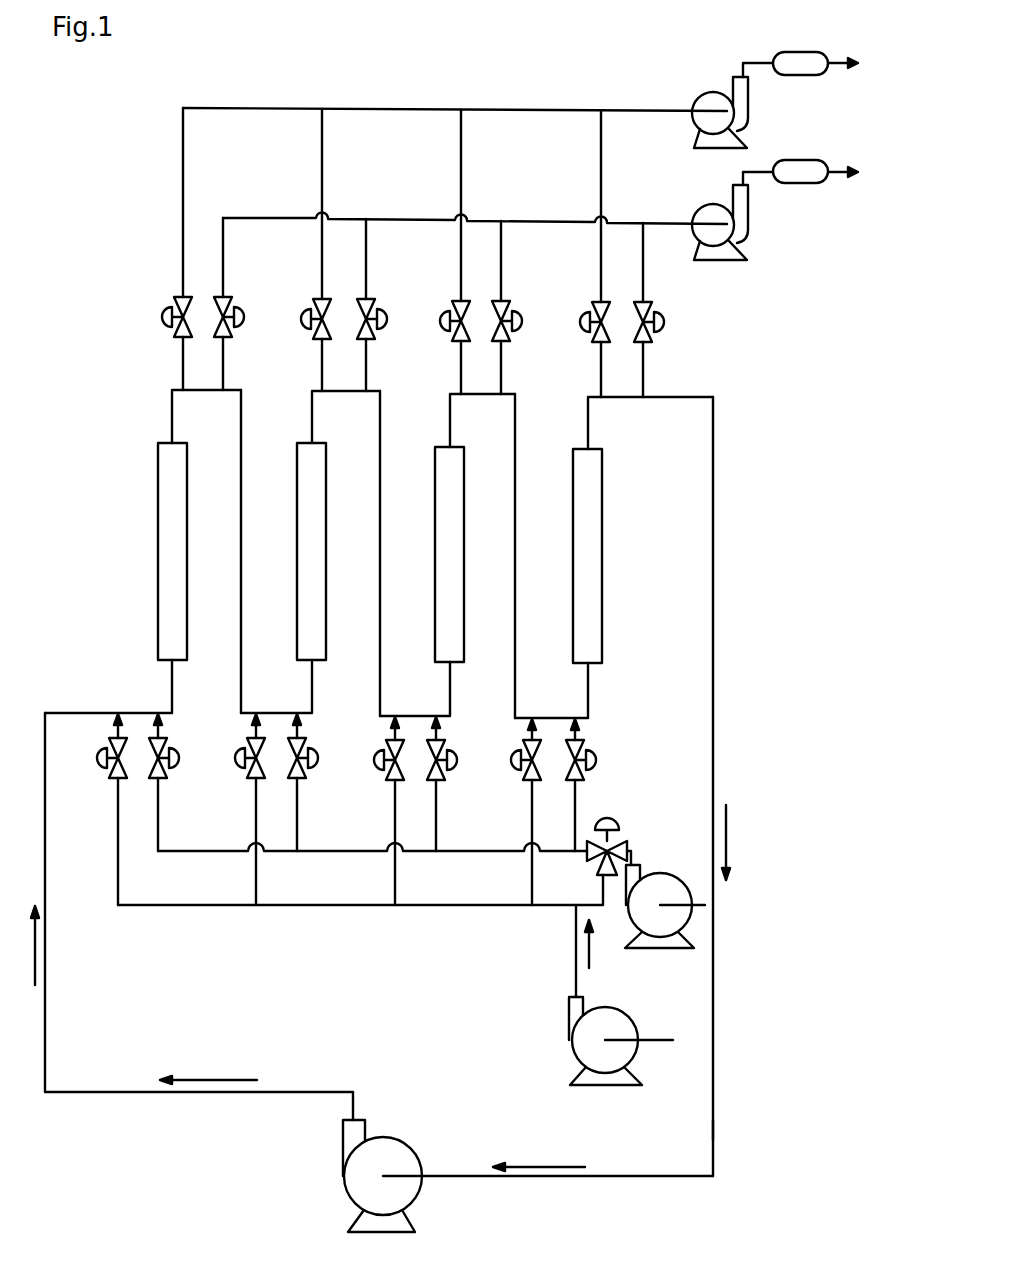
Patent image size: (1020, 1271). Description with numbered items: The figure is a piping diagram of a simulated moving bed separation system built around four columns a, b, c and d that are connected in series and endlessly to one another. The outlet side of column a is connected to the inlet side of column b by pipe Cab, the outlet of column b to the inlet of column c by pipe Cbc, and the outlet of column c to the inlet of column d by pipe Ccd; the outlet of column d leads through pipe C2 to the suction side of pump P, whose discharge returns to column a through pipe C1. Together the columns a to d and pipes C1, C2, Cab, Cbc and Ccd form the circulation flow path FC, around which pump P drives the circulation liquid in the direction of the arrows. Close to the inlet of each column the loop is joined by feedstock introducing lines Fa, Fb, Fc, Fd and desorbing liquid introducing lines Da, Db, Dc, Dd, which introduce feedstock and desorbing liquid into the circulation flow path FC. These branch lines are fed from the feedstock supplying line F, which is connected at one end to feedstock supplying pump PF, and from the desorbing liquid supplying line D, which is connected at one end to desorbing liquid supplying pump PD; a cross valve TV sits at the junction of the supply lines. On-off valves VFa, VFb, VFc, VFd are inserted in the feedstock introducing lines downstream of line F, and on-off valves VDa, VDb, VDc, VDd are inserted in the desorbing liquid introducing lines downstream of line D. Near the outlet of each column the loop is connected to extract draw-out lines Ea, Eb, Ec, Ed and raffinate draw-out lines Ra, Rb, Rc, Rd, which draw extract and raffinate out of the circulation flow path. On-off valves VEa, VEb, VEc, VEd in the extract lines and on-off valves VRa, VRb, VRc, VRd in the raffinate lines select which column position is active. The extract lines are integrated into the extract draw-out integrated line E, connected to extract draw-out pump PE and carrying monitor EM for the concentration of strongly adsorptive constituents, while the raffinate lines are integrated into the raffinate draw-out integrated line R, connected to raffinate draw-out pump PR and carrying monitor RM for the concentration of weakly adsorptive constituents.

The raffinate draw-out integrated line R is at (455, 94).
The extract draw-out integrated line E is at (475, 206).
The raffinate draw-out pump PR is at (714, 100).
The monitor for monitoring the concentration of weakly adsorptive constituents RM is at (800, 47).
The extract draw-out pump PE is at (713, 217).
The monitor for monitoring the concentration of strongly adsorptive constituents EM is at (800, 155).
The raffinate draw-out line Ra is at (183, 364).
The extract draw-out line Ea is at (223, 362).
The raffinate draw-out line Rb is at (322, 365).
The extract draw-out line Eb is at (366, 362).
The raffinate draw-out line Rc is at (461, 367).
The extract draw-out line Ec is at (501, 362).
The raffinate draw-out line Rd is at (601, 367).
The extract draw-out line Ed is at (643, 365).
The on-off valve VRa is at (163, 317).
The on-off valve VEa is at (247, 311).
The on-off valve VRb is at (311, 312).
The on-off valve VEb is at (388, 312).
The on-off valve VRc is at (450, 313).
The on-off valve VEc is at (514, 315).
The on-off valve VRd is at (590, 315).
The on-off valve VEd is at (655, 318).
The column a is at (143, 551).
The column b is at (310, 552).
The column c is at (447, 555).
The column d is at (614, 557).
The pipe Cab is at (241, 561).
The pipe Cbc is at (380, 561).
The pipe Ccd is at (515, 561).
The pipe C2 is at (713, 562).
The pipe C1 is at (110, 1092).
The feedstock introducing line Fa is at (108, 727).
The desorbing liquid introducing line Da is at (150, 727).
The feedstock introducing line Fb is at (248, 727).
The desorbing liquid introducing line Db is at (290, 727).
The feedstock introducing line Fc is at (387, 729).
The desorbing liquid introducing line Dc is at (430, 729).
The feedstock introducing line Fd is at (525, 729).
The desorbing liquid introducing line Dd is at (568, 729).
The on-off valve VFa is at (99, 766).
The on-off valve VDa is at (180, 755).
The on-off valve VFb is at (238, 767).
The on-off valve VDb is at (319, 755).
The on-off valve VFc is at (377, 769).
The on-off valve VDc is at (458, 757).
The on-off valve VFd is at (514, 769).
The on-off valve VDd is at (597, 759).
The desorbing liquid supplying line D is at (372, 863).
The feedstock supplying line F is at (360, 906).
The cross valve TV is at (610, 820).
The desorbing liquid supplying pump PD is at (645, 890).
The feedstock supplying pump PF is at (596, 1028).
The circulation flow path FC is at (718, 1128).
The pump P is at (392, 1152).